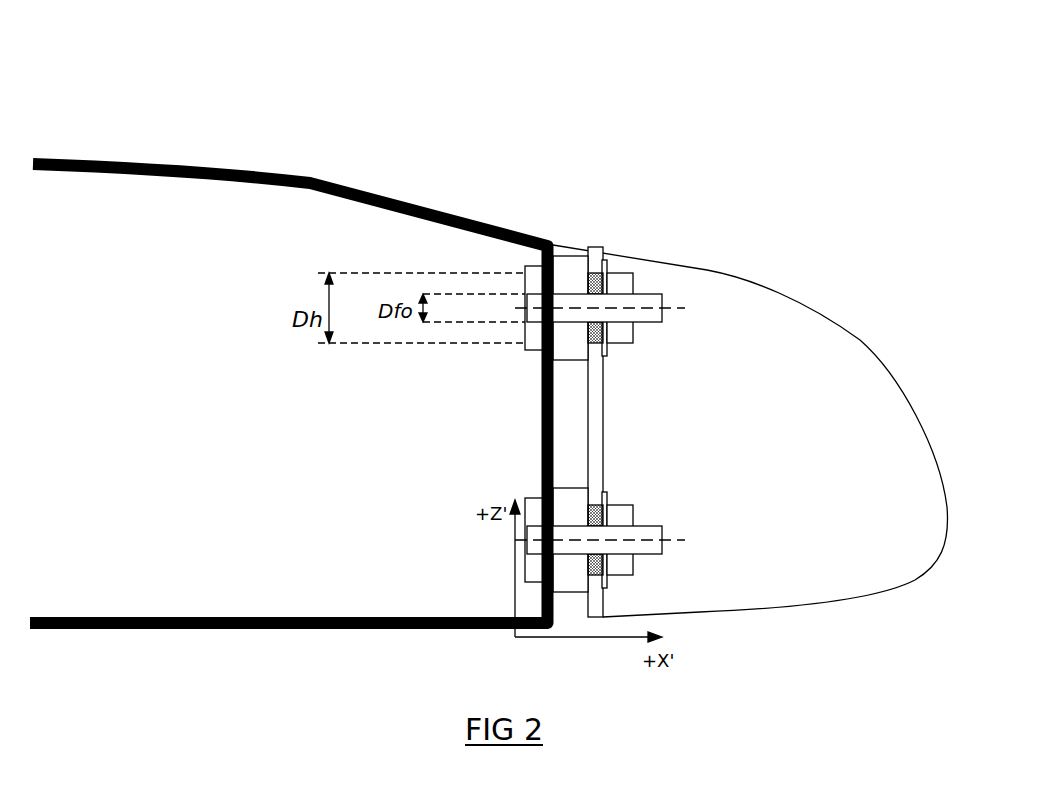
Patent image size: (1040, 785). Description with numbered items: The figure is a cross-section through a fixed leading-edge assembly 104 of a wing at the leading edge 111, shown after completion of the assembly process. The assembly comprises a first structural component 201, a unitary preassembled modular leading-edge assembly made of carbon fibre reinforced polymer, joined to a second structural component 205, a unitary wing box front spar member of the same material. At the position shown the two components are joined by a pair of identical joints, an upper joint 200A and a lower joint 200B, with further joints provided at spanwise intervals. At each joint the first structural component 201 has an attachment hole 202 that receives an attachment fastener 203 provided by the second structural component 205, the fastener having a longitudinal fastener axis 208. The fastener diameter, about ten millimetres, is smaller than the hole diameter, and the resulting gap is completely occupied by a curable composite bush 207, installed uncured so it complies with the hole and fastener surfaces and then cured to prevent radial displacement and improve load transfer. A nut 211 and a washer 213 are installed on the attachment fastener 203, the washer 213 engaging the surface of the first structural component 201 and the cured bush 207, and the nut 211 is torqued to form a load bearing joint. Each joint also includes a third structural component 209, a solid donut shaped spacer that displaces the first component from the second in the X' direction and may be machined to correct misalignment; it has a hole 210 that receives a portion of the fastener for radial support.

The fixed leading-edge assembly 104 is at (642, 45).
The leading edge 111 is at (940, 528).
The upper joint 200A is at (625, 207).
The lower joint 200B is at (572, 605).
The first structural component 201 is at (596, 420).
The attachment hole 202 is at (607, 320).
The attachment fastener 203 is at (527, 266).
The second structural component 205 is at (542, 412).
The curable composite bush 207 is at (598, 280).
The fastener axis 208 is at (527, 310).
The third structural component 209 is at (573, 265).
The hole 210 is at (575, 265).
The nut 211 is at (620, 333).
The washer 213 is at (607, 352).